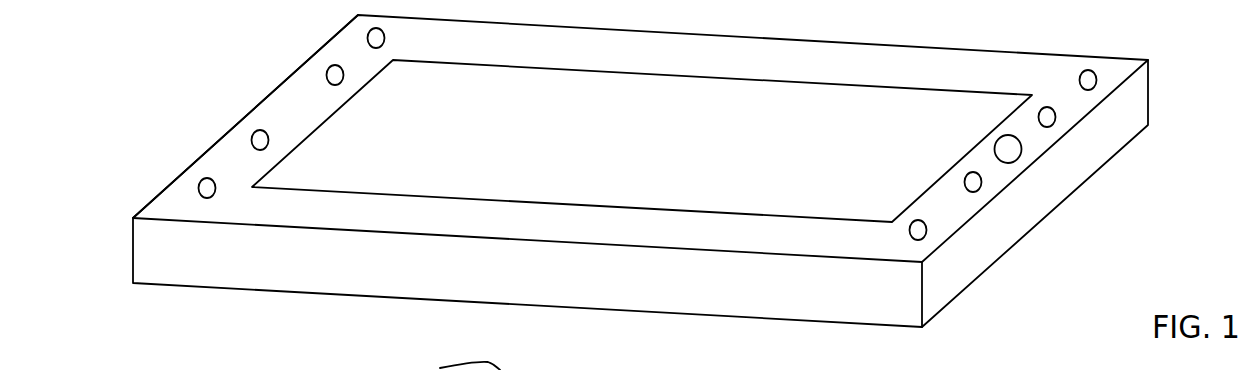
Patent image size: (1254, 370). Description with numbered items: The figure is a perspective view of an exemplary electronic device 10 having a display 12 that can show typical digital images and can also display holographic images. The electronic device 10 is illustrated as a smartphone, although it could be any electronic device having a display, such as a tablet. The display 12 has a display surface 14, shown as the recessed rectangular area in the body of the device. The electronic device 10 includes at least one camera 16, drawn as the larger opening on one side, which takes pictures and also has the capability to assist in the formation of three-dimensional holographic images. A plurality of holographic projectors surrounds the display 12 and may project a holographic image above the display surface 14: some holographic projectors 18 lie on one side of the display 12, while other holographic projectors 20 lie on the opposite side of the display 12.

The electronic device 10 is at (196, 99).
The display 12 is at (897, 129).
The display surface 14 is at (738, 99).
The camera 16 is at (1015, 156).
The holographic projectors 18 is at (1057, 117).
The holographic projectors 20 is at (368, 38).